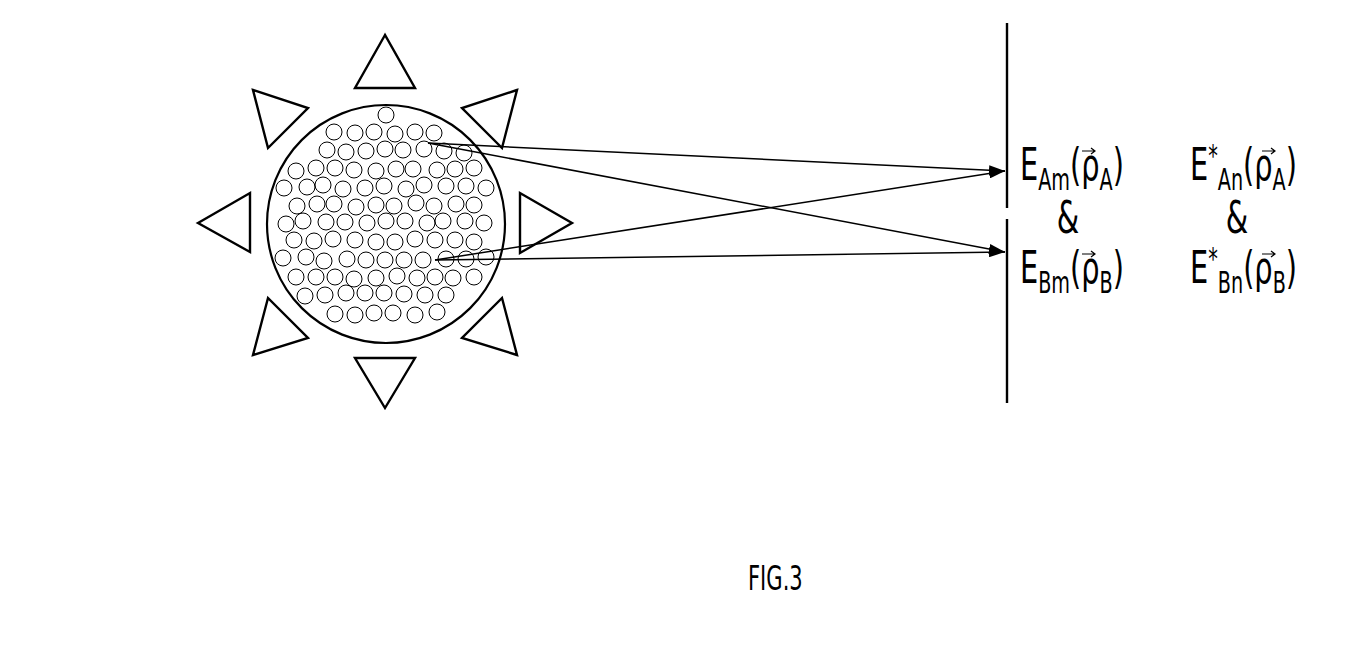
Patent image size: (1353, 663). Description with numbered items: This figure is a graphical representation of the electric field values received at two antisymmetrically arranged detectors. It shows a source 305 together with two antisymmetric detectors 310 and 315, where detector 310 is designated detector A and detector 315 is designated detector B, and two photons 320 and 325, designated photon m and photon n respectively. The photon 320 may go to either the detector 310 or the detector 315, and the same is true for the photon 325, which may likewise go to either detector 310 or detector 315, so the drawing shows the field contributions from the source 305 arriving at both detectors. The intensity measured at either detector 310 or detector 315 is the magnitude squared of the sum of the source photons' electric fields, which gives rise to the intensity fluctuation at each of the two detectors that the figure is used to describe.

The source 305 is at (210, 215).
The detector 310 is at (1007, 50).
The detector 315 is at (1007, 358).
The photon 320 is at (563, 112).
The photon 325 is at (562, 288).